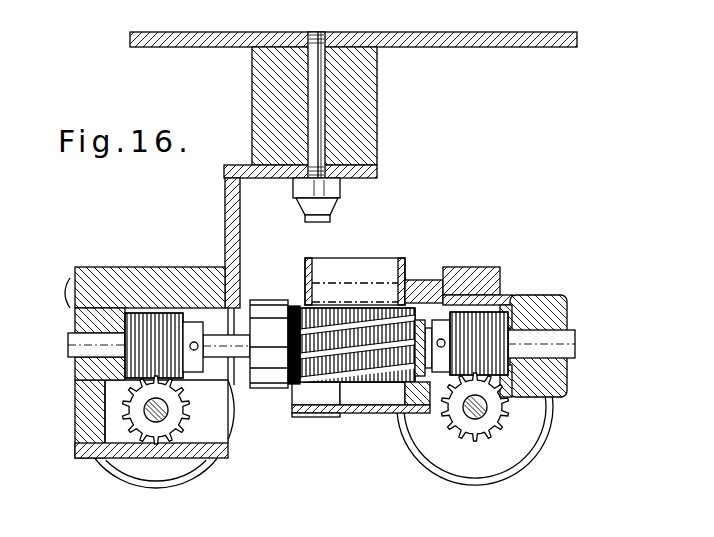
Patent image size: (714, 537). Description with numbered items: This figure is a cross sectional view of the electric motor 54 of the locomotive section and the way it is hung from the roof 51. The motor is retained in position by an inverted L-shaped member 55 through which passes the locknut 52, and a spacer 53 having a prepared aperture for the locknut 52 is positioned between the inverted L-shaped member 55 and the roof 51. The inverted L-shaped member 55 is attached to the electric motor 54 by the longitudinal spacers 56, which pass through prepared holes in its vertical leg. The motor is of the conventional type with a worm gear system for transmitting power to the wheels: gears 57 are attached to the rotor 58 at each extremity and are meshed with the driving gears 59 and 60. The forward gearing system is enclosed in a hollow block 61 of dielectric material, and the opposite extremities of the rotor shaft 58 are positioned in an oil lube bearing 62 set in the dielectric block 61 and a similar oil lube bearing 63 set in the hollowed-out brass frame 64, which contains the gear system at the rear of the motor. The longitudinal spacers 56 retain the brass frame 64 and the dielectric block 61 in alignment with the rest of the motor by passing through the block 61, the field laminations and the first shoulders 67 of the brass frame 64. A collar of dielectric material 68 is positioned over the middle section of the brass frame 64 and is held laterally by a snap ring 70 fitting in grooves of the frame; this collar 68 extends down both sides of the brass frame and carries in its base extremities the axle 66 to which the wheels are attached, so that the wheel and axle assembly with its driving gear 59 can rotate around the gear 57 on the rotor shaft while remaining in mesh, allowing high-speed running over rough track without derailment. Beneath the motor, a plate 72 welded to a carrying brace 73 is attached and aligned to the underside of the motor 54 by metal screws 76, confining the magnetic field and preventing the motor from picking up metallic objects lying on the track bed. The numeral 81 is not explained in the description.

The roof 51 is at (428, 44).
The locknut 52 is at (312, 80).
The spacer 53 is at (362, 117).
The electric motor 54 is at (360, 270).
The inverted L-shaped member 55 is at (362, 180).
The longitudinal spacers 56 is at (270, 296).
The gears 57 is at (160, 330).
The rotor 58 is at (76, 348).
The driving gear 59 is at (493, 421).
The driving gear 60 is at (147, 424).
The hollow block 61 is at (132, 268).
The oil lube bearing 62 is at (78, 362).
The oil lube bearing 63 is at (568, 368).
The brass frame 64 is at (566, 300).
The axle 66 is at (490, 409).
The first shoulders 67 is at (424, 286).
The collar of dielectric material 68 is at (467, 280).
The snap ring 70 is at (500, 297).
The plate 72 is at (355, 414).
The carrying brace 73 is at (305, 396).
The metal screws 76 is at (412, 410).
The sleeve 81 is at (263, 378).